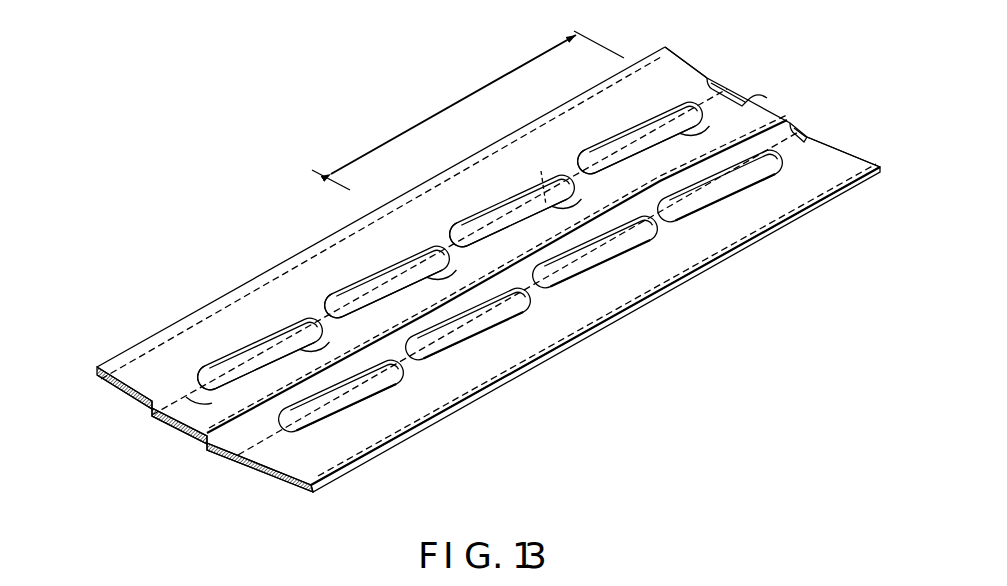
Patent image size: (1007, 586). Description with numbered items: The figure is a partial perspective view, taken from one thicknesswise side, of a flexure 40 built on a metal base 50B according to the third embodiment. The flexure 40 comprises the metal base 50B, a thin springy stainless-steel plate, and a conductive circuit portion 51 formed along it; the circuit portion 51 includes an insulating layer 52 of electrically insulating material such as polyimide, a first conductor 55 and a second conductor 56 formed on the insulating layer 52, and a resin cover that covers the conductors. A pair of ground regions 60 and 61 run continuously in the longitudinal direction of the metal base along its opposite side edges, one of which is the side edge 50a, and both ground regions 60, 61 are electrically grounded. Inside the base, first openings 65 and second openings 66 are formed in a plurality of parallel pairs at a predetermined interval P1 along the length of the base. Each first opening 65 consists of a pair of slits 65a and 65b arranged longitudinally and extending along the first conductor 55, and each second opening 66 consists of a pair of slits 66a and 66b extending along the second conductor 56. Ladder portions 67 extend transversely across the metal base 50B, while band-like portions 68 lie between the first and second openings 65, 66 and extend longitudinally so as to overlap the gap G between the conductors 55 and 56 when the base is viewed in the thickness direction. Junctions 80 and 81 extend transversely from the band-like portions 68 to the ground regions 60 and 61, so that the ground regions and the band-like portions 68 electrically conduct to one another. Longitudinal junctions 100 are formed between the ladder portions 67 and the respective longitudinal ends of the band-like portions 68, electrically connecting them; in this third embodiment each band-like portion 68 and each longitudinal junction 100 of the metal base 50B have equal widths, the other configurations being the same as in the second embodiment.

The flexure 40 is at (252, 272).
The side edge 50a is at (643, 56).
The metal base 50B is at (505, 380).
The conductive circuit portion 51 is at (203, 453).
The insulating layer 52 is at (284, 478).
The first conductor 55 is at (172, 427).
The second conductor 56 is at (228, 457).
The ground region 60 is at (650, 87).
The ground region 61 is at (823, 173).
The first opening 65 is at (268, 319).
The slit 65a is at (350, 268).
The slit 65b is at (215, 352).
The second opening 66 is at (655, 252).
The slit 66a is at (753, 178).
The slit 66b is at (612, 270).
The ladder portion 67 is at (450, 250).
The band-like portion 68 is at (363, 300).
The junction 80 is at (323, 310).
The junction 81 is at (712, 250).
The longitudinal junction 100 is at (195, 404).
The gap G is at (537, 174).
The interval P1 is at (441, 111).